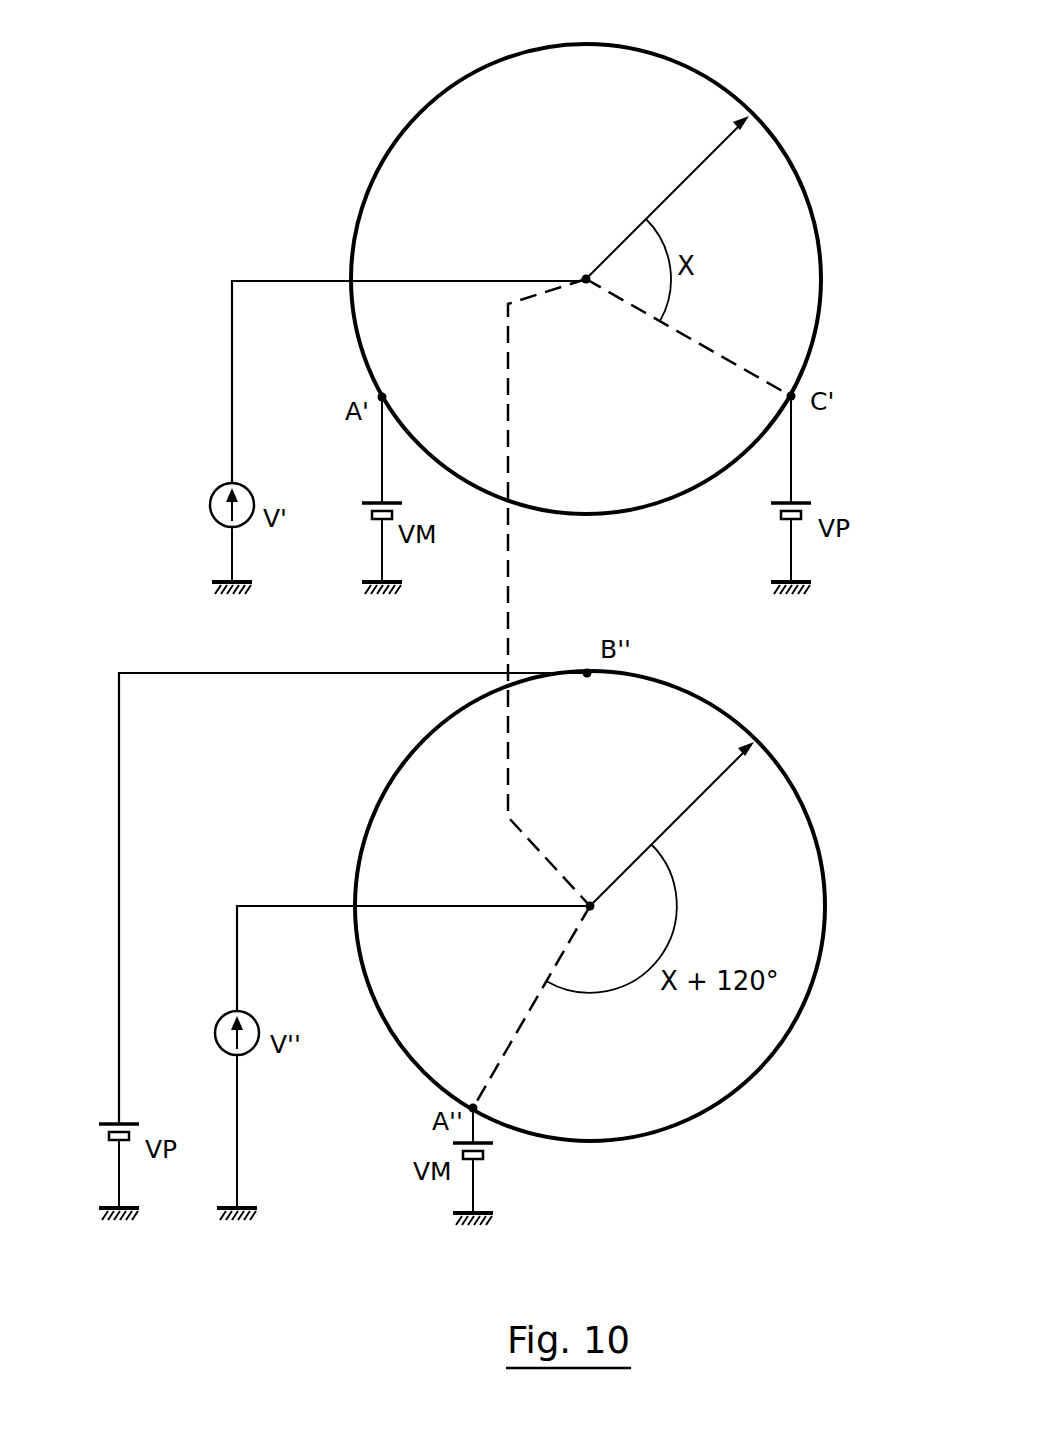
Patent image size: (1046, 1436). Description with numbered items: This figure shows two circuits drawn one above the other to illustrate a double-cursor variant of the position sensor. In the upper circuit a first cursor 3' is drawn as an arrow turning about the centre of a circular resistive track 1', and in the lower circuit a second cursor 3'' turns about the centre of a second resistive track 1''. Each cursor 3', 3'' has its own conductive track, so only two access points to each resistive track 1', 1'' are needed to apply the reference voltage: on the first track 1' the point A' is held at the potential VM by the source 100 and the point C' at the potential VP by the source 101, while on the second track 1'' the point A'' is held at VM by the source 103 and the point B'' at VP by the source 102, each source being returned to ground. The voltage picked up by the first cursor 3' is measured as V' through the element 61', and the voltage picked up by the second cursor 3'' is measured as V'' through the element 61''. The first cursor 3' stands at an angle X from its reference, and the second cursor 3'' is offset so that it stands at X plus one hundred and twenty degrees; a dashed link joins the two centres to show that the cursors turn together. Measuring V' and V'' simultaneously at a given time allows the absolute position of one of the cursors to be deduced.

The resistive track 1' is at (614, 279).
The cursor 3' is at (667, 197).
The first current source 61' is at (260, 489).
The first voltage source VM 100 is at (365, 498).
The voltage source VP 101 is at (808, 496).
The resistive track 1'' is at (630, 906).
The cursor 3'' is at (672, 824).
The second current source 61'' is at (270, 1077).
The voltage source VP 102 is at (136, 1122).
The voltage source VM 103 is at (490, 1150).